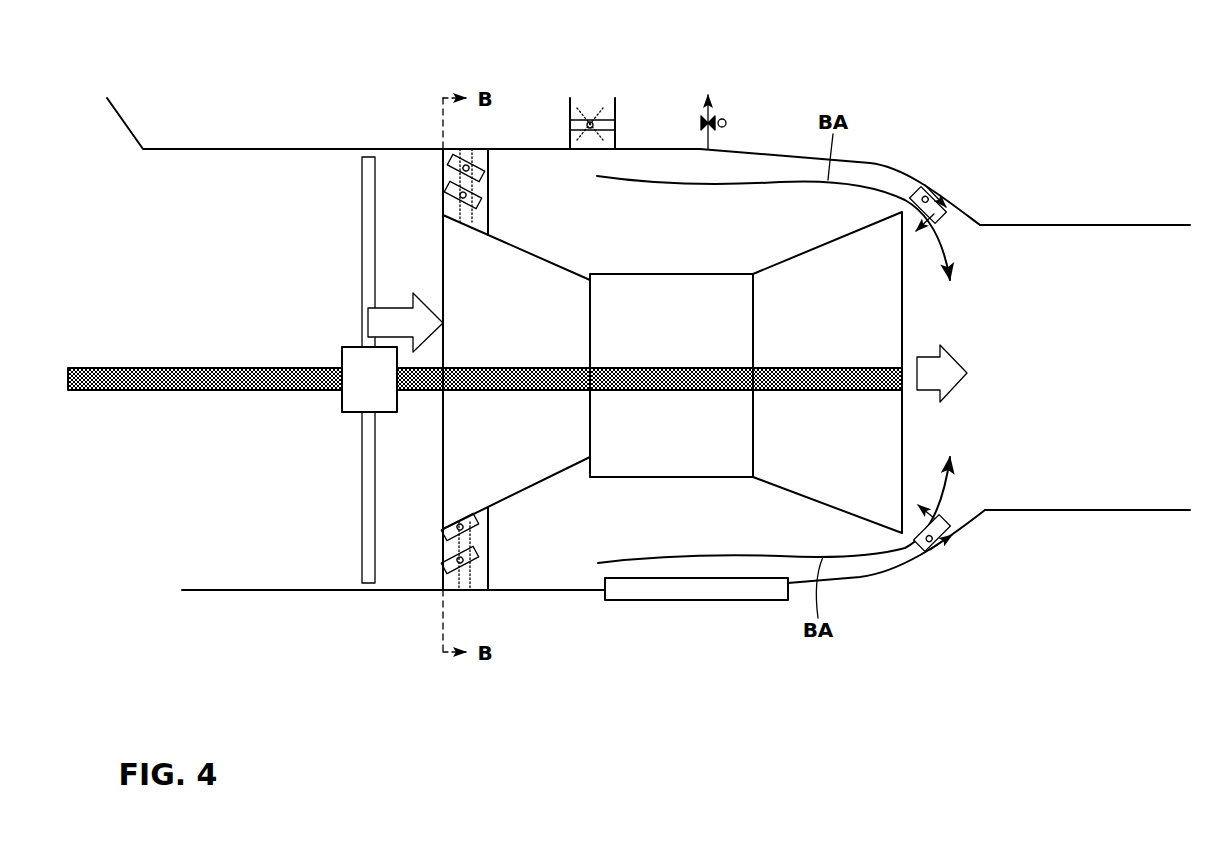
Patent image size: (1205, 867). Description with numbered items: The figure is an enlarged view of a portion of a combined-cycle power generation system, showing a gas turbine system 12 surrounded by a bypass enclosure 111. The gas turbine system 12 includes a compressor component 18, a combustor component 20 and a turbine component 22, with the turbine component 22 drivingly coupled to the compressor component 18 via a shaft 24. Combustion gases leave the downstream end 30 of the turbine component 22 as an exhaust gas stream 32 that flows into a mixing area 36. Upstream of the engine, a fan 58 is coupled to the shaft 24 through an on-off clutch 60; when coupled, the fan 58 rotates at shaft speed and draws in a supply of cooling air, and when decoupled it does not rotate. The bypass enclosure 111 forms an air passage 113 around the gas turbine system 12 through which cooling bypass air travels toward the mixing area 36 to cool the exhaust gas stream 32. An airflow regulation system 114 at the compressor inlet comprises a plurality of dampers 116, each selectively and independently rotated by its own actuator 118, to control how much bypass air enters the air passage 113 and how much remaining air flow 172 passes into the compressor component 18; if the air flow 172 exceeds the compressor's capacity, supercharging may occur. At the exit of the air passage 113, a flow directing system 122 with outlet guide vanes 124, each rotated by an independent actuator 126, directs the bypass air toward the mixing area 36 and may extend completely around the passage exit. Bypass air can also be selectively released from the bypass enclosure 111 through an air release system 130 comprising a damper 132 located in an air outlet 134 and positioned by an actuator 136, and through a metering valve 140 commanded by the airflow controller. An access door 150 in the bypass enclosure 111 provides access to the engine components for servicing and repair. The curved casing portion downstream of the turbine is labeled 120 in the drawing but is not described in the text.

The gas turbine system 12 is at (671, 430).
The compressor component 18 is at (477, 334).
The combustor component 20 is at (660, 337).
The turbine component 22 is at (816, 329).
The shaft 24 is at (197, 366).
The downstream end 30 is at (901, 440).
The exhaust gas stream 32 is at (925, 384).
The mixing area 36 is at (1017, 379).
The fan 58 is at (362, 558).
The on-off clutch 60 is at (358, 391).
The bypass enclosure 111 is at (774, 148).
The air passage 113 is at (664, 241).
The airflow regulation system 114 is at (507, 369).
The damper 116 is at (484, 172).
The actuator 118 is at (481, 199).
The curved nozzle casing section 120 is at (896, 157).
The flow directing system 122 is at (954, 229).
The outlet guide vane 124 is at (926, 200).
The actuator 126 is at (940, 200).
The air release system 130 is at (591, 99).
The damper 132 is at (570, 125).
The air outlet 134 is at (577, 96).
The actuator 136 is at (591, 121).
The metering valve 140 is at (712, 112).
The access door 150 is at (706, 601).
The air flow 172 is at (379, 334).